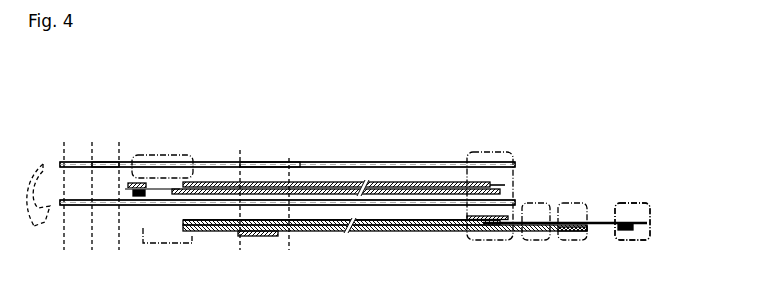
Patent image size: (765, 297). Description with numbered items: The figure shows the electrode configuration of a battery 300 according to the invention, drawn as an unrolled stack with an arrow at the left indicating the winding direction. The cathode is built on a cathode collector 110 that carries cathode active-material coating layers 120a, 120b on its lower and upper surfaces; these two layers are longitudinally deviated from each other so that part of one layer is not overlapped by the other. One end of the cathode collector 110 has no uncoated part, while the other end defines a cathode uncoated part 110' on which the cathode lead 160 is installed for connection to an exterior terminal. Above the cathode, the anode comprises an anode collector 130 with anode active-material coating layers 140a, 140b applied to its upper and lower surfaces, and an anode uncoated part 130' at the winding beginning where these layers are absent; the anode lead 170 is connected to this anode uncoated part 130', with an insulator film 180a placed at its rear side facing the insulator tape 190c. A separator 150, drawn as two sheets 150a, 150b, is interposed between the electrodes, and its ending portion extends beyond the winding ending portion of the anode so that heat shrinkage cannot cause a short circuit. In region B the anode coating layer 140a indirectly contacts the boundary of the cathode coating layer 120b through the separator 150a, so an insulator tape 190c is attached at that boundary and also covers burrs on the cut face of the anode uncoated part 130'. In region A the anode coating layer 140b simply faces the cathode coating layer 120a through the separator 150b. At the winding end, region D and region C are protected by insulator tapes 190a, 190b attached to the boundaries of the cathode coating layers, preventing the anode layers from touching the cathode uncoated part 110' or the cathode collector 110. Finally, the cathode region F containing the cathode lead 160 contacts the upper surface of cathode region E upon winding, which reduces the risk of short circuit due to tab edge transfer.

The display device 300 is at (471, 95).
The cathode collector 110 is at (581, 228).
The cathode uncoated part 110' is at (619, 210).
The cathode active-material coating layer 120a is at (315, 232).
The cathode active-material coating layer 120b is at (415, 232).
The anode collector 130 is at (270, 148).
The anode uncoated part 130' is at (162, 151).
The anode active-material coating layer 140a is at (425, 189).
The anode active-material coating layer 140b is at (330, 182).
The separator 150 is at (563, 154).
The separator 150a is at (516, 163).
The separator 150b is at (516, 201).
The cathode lead 160 is at (626, 231).
The anode lead 170 is at (130, 197).
The insulator film 180a is at (121, 161).
The insulator tape 190a is at (570, 232).
The insulator tape 190b is at (498, 221).
The insulator tape 190c is at (272, 237).
The region A is at (170, 244).
The region B is at (250, 245).
The region C is at (470, 241).
The region D is at (593, 241).
The cathode region E is at (535, 241).
The cathode region F is at (648, 241).